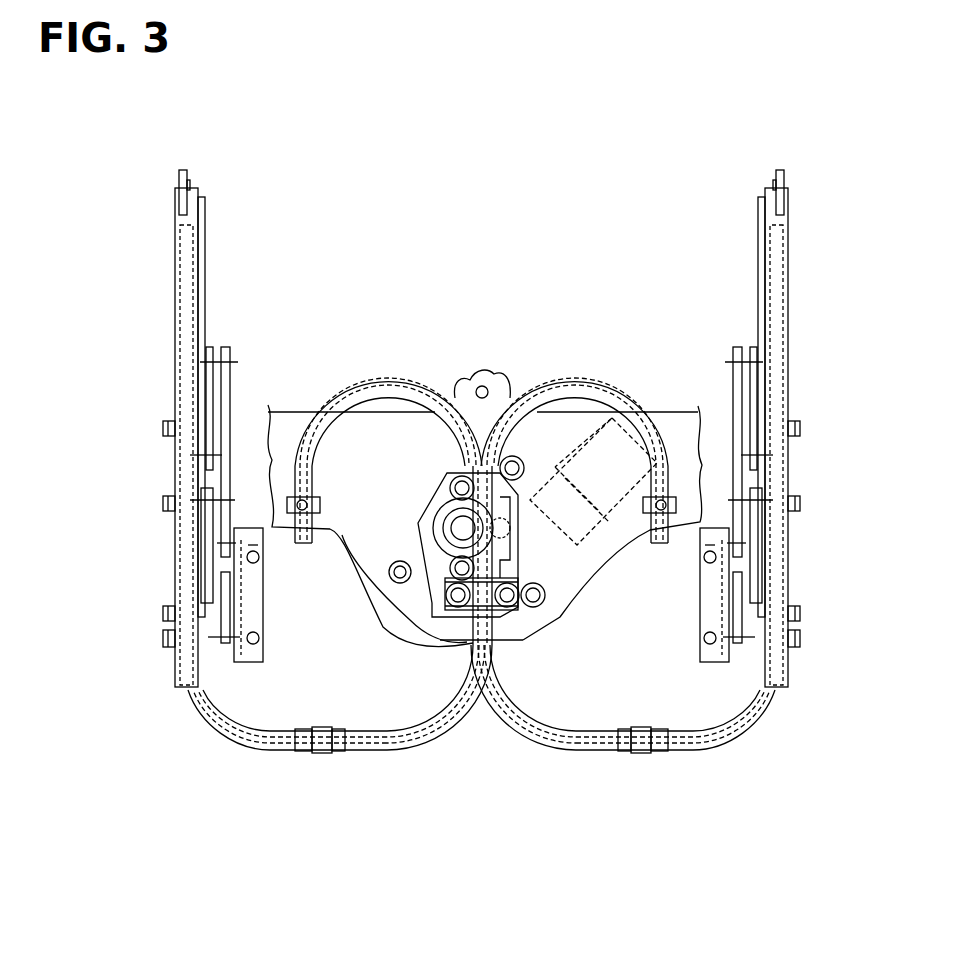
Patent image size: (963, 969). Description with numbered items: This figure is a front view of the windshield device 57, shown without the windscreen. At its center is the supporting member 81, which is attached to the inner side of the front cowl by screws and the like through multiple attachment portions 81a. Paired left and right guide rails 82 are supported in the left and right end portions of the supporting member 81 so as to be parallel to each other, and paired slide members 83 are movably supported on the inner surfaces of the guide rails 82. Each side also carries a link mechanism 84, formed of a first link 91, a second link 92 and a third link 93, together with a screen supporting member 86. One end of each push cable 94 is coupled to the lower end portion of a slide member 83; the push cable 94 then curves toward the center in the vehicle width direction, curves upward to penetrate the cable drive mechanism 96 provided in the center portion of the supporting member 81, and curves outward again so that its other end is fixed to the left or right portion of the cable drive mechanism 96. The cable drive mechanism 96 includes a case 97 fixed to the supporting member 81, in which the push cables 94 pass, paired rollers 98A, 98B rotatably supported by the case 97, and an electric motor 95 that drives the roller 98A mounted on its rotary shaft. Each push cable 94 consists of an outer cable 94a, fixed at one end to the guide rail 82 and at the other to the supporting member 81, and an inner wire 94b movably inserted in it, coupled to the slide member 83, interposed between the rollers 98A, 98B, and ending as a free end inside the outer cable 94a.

The windshield device 57 is at (580, 213).
The supporting member 81 is at (273, 413).
The attachment portion 81a is at (490, 373).
The guide rail 82 is at (185, 237).
The slide member 83 is at (205, 565).
The link mechanism 84 is at (483, 499).
The screen supporting member 86 is at (253, 665).
The first link 91 is at (222, 615).
The second link 92 is at (208, 385).
The third link 93 is at (226, 348).
The push cable 94 is at (481, 610).
The outer cable 94a is at (448, 733).
The inner wire 94b is at (410, 737).
The electric motor 95 is at (378, 637).
The cable drive mechanism 96 is at (522, 488).
The case 97 is at (403, 640).
The roller 98A is at (452, 515).
The roller 98B is at (650, 420).